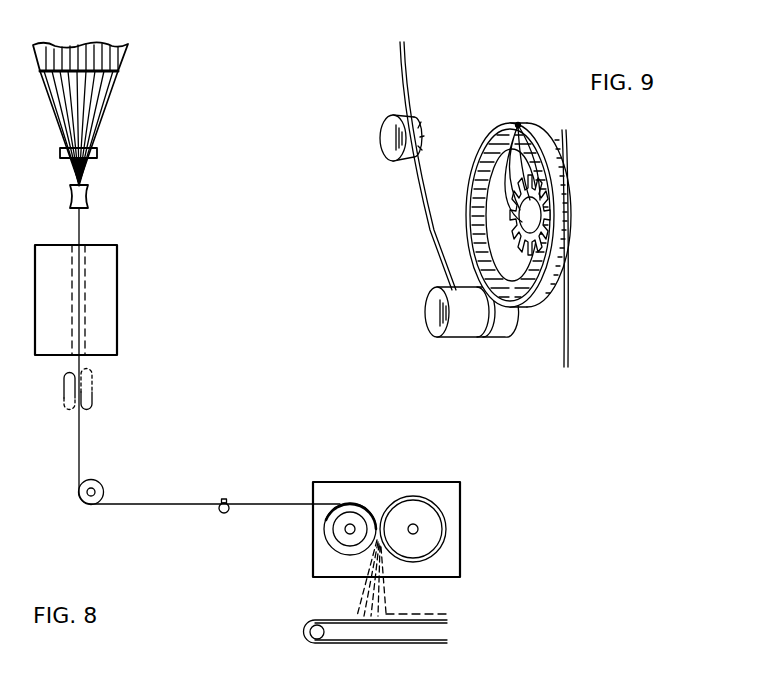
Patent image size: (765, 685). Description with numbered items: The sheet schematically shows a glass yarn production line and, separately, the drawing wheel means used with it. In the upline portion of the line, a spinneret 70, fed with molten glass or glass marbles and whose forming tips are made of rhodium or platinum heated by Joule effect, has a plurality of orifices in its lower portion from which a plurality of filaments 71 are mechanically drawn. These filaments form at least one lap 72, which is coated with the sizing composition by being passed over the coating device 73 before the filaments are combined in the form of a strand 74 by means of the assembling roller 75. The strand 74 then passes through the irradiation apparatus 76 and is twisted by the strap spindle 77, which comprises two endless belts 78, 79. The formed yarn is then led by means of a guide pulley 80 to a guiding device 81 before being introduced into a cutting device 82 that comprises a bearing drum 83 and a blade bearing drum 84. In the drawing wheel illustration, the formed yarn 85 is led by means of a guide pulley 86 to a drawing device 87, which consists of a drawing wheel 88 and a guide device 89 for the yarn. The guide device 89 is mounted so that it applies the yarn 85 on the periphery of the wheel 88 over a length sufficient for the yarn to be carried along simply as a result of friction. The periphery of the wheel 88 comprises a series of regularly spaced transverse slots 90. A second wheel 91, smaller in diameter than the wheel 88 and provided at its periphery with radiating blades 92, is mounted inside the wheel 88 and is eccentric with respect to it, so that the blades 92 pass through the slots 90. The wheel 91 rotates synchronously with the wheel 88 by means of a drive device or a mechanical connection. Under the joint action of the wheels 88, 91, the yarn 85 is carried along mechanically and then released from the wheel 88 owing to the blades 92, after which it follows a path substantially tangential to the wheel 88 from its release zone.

In FIG. 8, the spinneret 70 is at (82, 62).
In FIG. 8, the filaments 71 is at (78, 120).
In FIG. 8, the lap 72 is at (112, 107).
In FIG. 8, the coating device 73 is at (98, 155).
In FIG. 8, the strand 74 is at (80, 227).
In FIG. 8, the assembling roller 75 is at (92, 196).
In FIG. 8, the irradiation apparatus 76 is at (118, 298).
In FIG. 8, the strap spindle 77 is at (56, 400).
In FIG. 8, the endless belt 78 is at (64, 380).
In FIG. 8, the endless belt 79 is at (93, 399).
In FIG. 8, the guide pulley 80 is at (98, 490).
In FIG. 8, the guiding device 81 is at (224, 514).
In FIG. 8, the cutting device 82 is at (470, 560).
In FIG. 8, the bearing drum 83 is at (436, 517).
In FIG. 8, the blade bearing drum 84 is at (357, 520).
In FIG. 9, the formed yarn 85 is at (421, 222).
In FIG. 9, the guide pulley 86 is at (390, 133).
In FIG. 9, the drawing device 87 is at (622, 208).
In FIG. 9, the drawing wheel 88 is at (575, 165).
In FIG. 9, the guide device 89 is at (432, 316).
In FIG. 9, the transverse slots 90 is at (566, 238).
In FIG. 9, the second wheel 91 is at (522, 215).
In FIG. 9, the radiating blades 92 is at (522, 157).